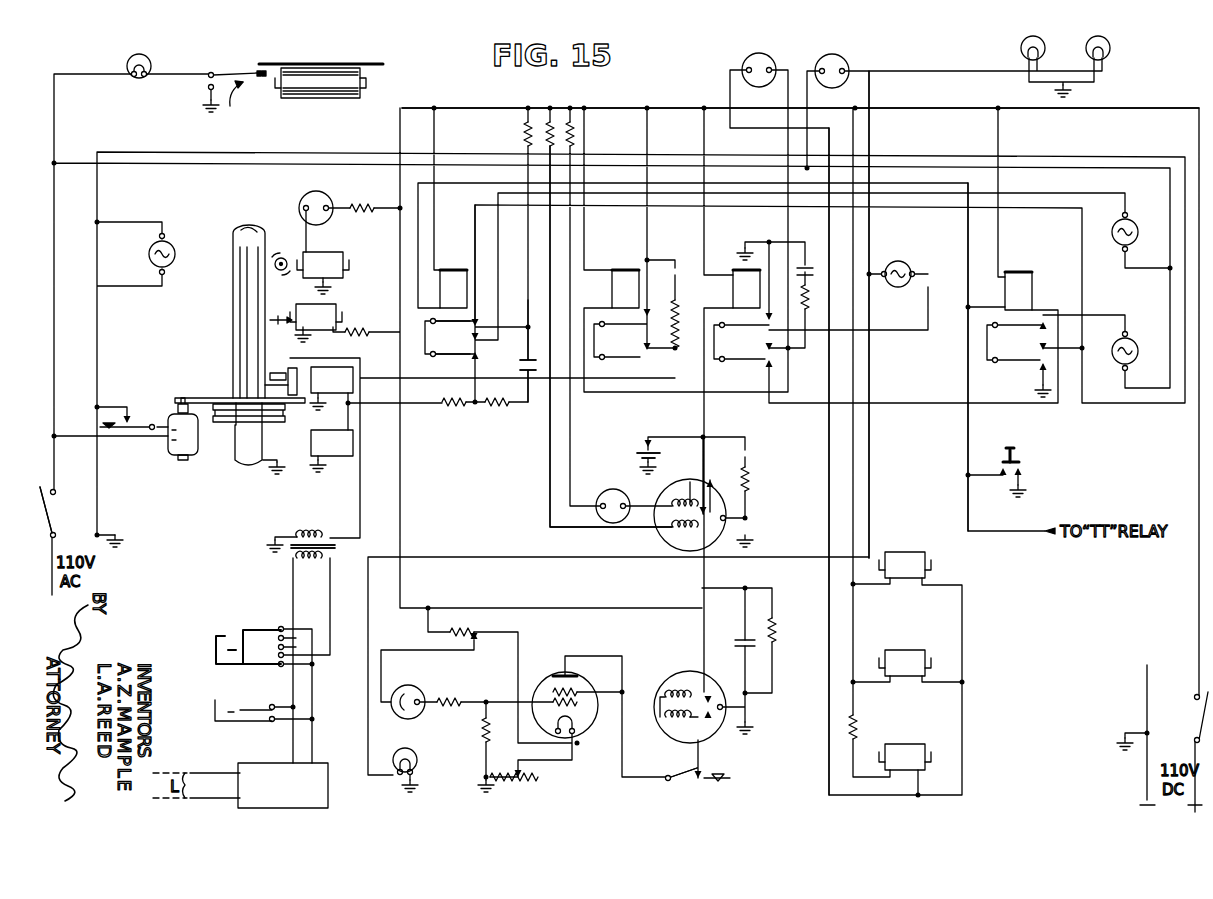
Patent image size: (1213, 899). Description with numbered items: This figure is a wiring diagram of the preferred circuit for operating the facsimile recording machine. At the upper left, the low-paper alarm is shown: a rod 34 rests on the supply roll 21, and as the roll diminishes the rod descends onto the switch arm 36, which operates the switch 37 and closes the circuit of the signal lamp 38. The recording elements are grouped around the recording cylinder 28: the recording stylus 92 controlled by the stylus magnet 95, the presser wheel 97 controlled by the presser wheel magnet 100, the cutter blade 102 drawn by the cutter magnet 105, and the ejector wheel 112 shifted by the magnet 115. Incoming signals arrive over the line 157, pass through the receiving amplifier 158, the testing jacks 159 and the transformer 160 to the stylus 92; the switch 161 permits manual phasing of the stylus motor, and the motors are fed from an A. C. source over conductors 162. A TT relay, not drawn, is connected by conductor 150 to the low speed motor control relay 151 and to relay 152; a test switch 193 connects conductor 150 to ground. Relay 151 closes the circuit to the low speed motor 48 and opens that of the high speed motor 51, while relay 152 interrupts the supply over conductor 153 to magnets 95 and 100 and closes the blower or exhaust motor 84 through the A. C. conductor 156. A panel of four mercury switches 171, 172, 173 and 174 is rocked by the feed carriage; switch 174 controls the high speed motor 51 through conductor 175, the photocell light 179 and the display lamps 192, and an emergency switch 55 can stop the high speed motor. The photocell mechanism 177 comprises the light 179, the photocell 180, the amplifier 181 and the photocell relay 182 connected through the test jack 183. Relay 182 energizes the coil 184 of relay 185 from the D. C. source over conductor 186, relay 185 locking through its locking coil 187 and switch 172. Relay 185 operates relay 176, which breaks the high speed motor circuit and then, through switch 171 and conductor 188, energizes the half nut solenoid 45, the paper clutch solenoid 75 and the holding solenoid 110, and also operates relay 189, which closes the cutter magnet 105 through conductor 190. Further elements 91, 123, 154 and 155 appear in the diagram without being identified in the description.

The supply roll 21 is at (330, 92).
The recording cylinder 28 is at (245, 466).
The rod 34 is at (371, 64).
The switch arm 36 is at (238, 70).
The switch 37 is at (239, 101).
The signal lamp 38 is at (148, 56).
The half nut solenoid 45 is at (905, 562).
The low speed motor 48 is at (1135, 361).
The high speed motor 51 is at (900, 287).
The emergency switch 55 is at (660, 457).
The paper clutch solenoid 75 is at (905, 660).
The blower or exhaust motor 84 is at (1135, 243).
The motor 91 is at (172, 450).
The recording stylus 92 is at (279, 372).
The stylus magnet 95 is at (336, 375).
The presser wheel 97 is at (296, 376).
The presser wheel magnet 100 is at (336, 450).
The cutter blade 102 is at (279, 316).
The cutter magnet 105 is at (338, 317).
The holding solenoid 110 is at (903, 752).
The ejector wheel 112 is at (286, 258).
The ejector wheel magnet 115 is at (330, 262).
The AC source 123 is at (178, 252).
The conductor 150 is at (968, 425).
The low speed motor control relay 151 is at (1028, 288).
The relay 152 is at (450, 285).
The conductor 153 is at (942, 112).
The contact 154 is at (465, 367).
The contact 155 is at (460, 330).
The A. C. conductor 156 is at (475, 218).
The line 157 is at (228, 790).
The receiving amplifier 158 is at (318, 798).
The testing jacks 159 is at (242, 708).
The transformer 160 is at (296, 538).
The switch 161 is at (121, 405).
The conductors 162 is at (75, 483).
The mercury switch 171 is at (746, 58).
The mercury switch 172 is at (609, 488).
The mercury switch 173 is at (333, 195).
The mercury switch 174 is at (845, 60).
The conductor 175 is at (869, 136).
The relay 176 is at (745, 280).
The photocell mechanism 177 is at (453, 719).
The photocell light 179 is at (398, 752).
The photocell 180 is at (410, 677).
The amplifier 181 is at (547, 682).
The photocell relay 182 is at (710, 735).
The test jack 183 is at (680, 778).
The coil 184 is at (664, 537).
The relay 185 is at (662, 500).
The conductor 186 is at (548, 470).
The locking coil 187 is at (686, 483).
The conductor 188 is at (829, 424).
The relay 189 is at (622, 285).
The conductor 190 is at (538, 400).
The display lamps 192 is at (1088, 44).
The test switch 193 is at (1030, 463).